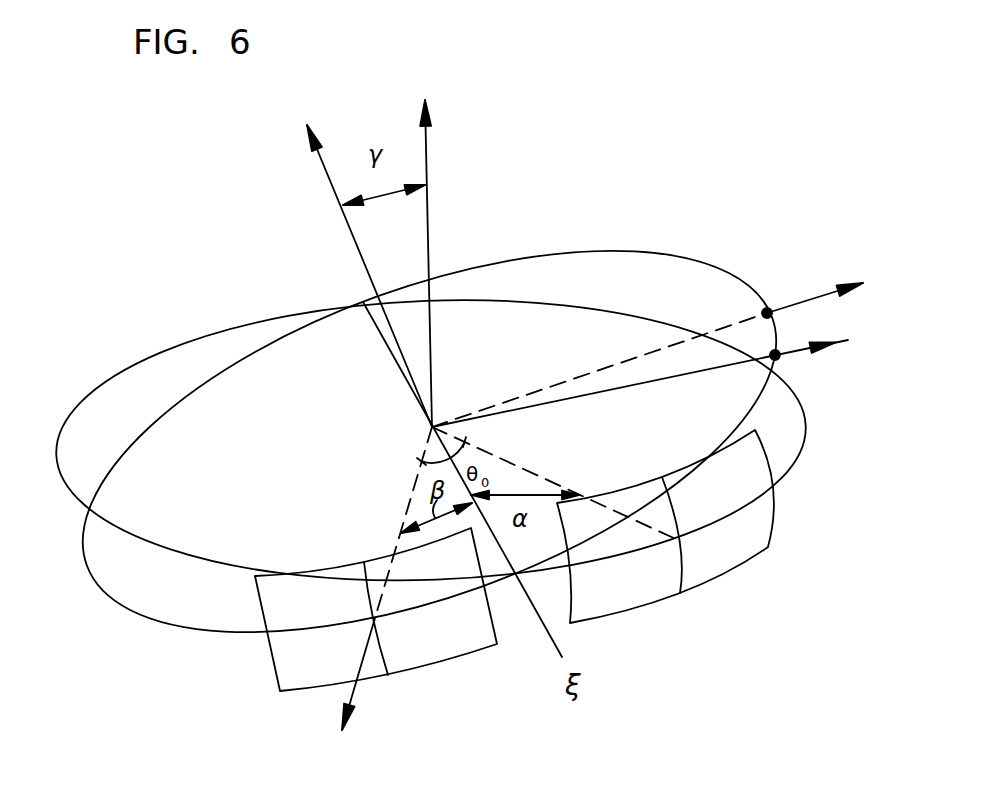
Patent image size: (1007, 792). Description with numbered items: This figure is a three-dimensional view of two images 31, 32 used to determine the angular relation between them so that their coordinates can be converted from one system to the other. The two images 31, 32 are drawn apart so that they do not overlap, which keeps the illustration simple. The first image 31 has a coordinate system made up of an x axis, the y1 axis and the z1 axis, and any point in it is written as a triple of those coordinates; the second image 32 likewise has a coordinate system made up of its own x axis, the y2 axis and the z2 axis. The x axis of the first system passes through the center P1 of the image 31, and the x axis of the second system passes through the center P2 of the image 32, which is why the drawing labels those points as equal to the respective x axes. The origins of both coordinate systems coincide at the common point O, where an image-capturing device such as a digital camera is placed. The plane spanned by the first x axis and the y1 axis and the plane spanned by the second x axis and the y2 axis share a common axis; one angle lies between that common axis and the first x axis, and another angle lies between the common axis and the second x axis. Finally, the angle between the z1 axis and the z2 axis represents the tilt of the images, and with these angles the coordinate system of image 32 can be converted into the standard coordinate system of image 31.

The image 31 is at (775, 516).
The image 32 is at (272, 663).
The center of the image P1 is at (678, 540).
The center of the image P2 is at (378, 597).
The camera origin O is at (418, 479).
The z1 axis z1 is at (427, 247).
The z2 axis z2 is at (356, 258).
The y1 axis y1 is at (670, 346).
The y2 axis y2 is at (662, 380).